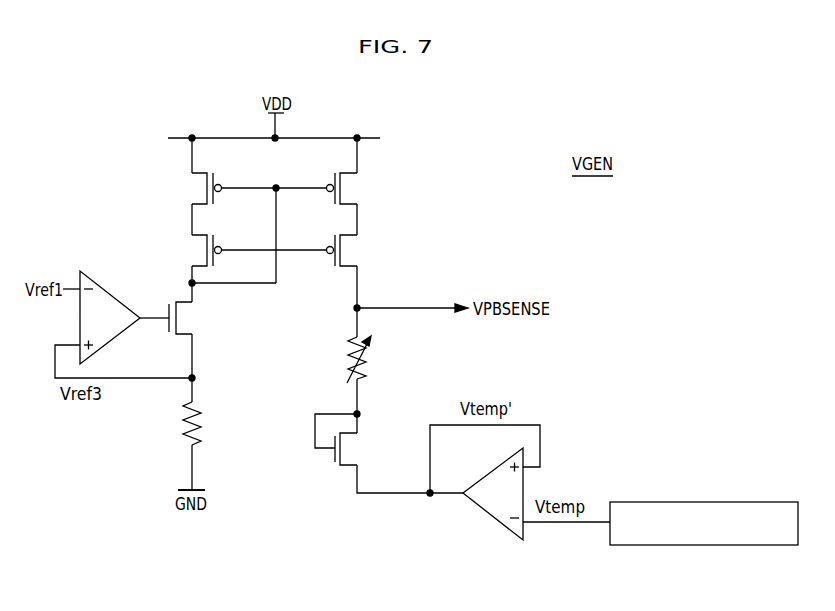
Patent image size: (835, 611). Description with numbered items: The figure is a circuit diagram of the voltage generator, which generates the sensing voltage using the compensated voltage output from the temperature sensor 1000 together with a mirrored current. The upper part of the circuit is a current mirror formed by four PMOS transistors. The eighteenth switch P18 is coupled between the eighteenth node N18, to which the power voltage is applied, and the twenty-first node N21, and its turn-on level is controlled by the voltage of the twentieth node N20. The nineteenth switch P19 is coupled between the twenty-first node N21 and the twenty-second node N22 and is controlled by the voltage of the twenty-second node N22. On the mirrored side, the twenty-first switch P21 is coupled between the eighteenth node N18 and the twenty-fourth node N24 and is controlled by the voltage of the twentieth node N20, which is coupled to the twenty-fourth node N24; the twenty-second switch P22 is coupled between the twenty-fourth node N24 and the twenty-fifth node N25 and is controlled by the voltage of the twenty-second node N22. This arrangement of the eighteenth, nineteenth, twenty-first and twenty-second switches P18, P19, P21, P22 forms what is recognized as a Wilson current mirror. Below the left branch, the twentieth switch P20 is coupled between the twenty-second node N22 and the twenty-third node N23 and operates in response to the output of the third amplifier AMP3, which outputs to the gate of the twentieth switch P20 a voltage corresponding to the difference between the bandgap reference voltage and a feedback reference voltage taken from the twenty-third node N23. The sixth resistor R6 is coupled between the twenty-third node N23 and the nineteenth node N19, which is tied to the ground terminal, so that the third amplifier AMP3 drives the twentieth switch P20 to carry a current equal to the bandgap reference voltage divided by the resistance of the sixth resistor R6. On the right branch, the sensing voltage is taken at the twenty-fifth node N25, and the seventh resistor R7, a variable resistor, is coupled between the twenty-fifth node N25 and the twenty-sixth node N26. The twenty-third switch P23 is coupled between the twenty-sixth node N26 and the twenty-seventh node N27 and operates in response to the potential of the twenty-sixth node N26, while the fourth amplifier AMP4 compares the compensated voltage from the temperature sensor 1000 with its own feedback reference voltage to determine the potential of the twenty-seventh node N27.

The temperature sensor 1000 is at (719, 502).
The eighteenth node N18 is at (326, 138).
The nineteenth node N19 is at (192, 463).
The twentieth node N20 is at (233, 188).
The twenty-first node N21 is at (192, 215).
The twenty-second node N22 is at (233, 250).
The twenty-third node N23 is at (192, 357).
The twenty-fourth node N24 is at (357, 215).
The twenty-fifth node N25 is at (357, 283).
The twenty-sixth node N26 is at (357, 395).
The twenty-seventh node N27 is at (392, 494).
The eighteenth switch P18 is at (196, 188).
The nineteenth switch P19 is at (196, 250).
The twentieth switch P20 is at (193, 318).
The twenty-first switch P21 is at (354, 188).
The twenty-second switch P22 is at (355, 250).
The twenty-third switch P23 is at (348, 439).
The sixth resistor R6 is at (203, 423).
The seventh resistor R7 is at (368, 359).
The third amplifier AMP3 is at (116, 317).
The fourth amplifier AMP4 is at (493, 494).